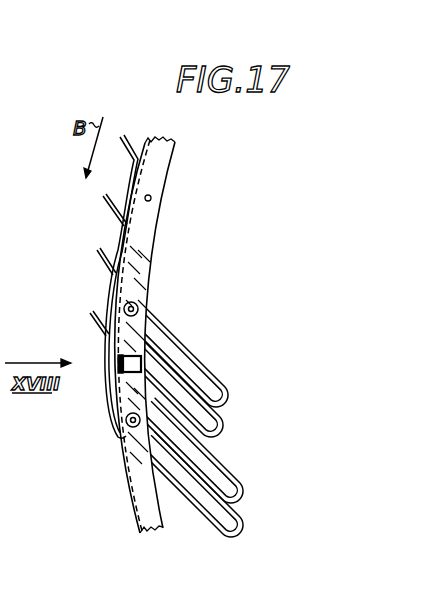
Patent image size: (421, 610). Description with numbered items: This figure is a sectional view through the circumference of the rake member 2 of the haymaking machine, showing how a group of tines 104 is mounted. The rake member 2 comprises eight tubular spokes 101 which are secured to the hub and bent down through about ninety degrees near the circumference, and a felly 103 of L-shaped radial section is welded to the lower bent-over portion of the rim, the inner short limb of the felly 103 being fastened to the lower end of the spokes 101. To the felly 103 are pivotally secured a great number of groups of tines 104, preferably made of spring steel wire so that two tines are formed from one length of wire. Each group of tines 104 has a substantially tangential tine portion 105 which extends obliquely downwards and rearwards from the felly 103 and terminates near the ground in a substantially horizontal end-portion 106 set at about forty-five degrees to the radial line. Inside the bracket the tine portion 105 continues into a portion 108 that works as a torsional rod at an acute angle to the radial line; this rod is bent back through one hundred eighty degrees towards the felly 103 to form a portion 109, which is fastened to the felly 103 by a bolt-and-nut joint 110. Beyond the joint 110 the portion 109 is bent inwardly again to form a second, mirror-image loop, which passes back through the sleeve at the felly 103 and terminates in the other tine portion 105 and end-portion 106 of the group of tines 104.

The rake member 2 is at (70, 221).
The tubular spoke 101 is at (122, 362).
The felly 103 is at (152, 218).
The group of tines 104 is at (108, 423).
The tine portion 105 is at (108, 392).
The end-portion 106 is at (97, 258).
The torsional rod portion 108 is at (189, 385).
The torsional rod portion 109 is at (210, 388).
The bolt-and-nut joint 110 is at (139, 306).